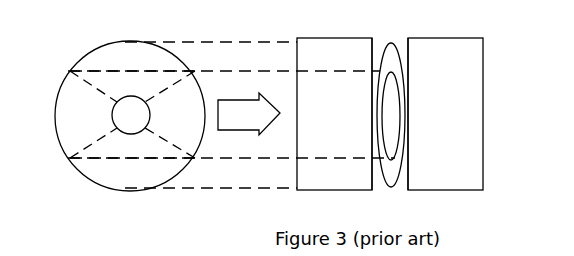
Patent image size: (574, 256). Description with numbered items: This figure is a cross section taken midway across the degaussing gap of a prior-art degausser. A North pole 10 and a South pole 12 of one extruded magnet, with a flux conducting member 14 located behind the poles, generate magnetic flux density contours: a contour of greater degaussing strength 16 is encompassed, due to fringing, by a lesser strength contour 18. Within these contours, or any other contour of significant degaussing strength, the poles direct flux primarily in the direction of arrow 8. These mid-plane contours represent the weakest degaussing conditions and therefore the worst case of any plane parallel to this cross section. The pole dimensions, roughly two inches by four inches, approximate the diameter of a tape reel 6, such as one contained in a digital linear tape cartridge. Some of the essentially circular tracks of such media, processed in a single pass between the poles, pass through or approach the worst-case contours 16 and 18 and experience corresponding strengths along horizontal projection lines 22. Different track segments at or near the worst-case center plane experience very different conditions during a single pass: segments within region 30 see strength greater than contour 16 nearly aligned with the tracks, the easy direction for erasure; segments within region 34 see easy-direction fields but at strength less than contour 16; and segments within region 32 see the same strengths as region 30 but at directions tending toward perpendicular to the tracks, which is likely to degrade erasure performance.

The tape reel 6 is at (140, 43).
The arrow 8 is at (270, 128).
The North pole 10 is at (337, 52).
The South pole 12 is at (447, 53).
The flux conducting member 14 is at (400, 43).
The flux density contour of greater degaussing strength 16 is at (398, 138).
The lesser strength contour 18 is at (404, 187).
The horizontal projection lines 22 is at (246, 70).
The region 30 is at (132, 85).
The region 32 is at (82, 113).
The region 34 is at (136, 58).